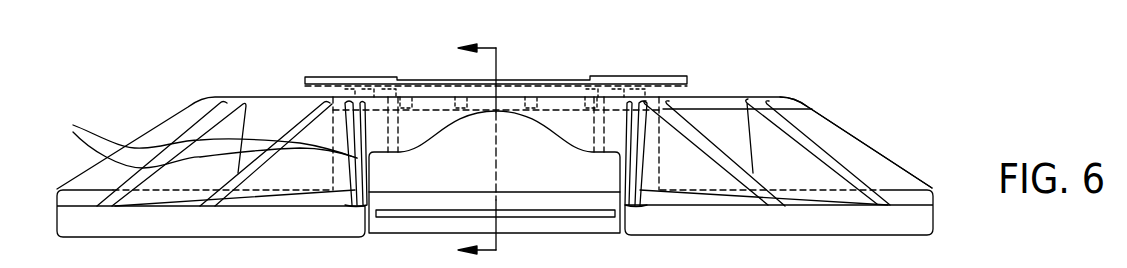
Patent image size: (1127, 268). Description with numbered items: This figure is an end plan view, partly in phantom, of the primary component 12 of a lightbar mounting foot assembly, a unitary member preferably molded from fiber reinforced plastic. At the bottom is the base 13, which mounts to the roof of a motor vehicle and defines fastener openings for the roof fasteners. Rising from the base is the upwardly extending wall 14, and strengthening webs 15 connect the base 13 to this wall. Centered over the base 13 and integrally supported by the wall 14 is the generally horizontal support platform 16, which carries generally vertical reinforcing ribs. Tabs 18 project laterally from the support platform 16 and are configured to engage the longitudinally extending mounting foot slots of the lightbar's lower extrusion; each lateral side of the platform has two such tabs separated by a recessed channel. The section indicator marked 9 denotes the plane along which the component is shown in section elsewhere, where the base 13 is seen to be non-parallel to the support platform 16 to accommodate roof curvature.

The primary component 12 is at (200, 75).
The base 13 is at (240, 227).
The upwardly extending wall 14 is at (840, 147).
The strengthening webs 15 is at (199, 140).
The support platform 16 is at (347, 76).
The tabs 18 is at (313, 77).
The section line 9- 9 is at (463, 151).